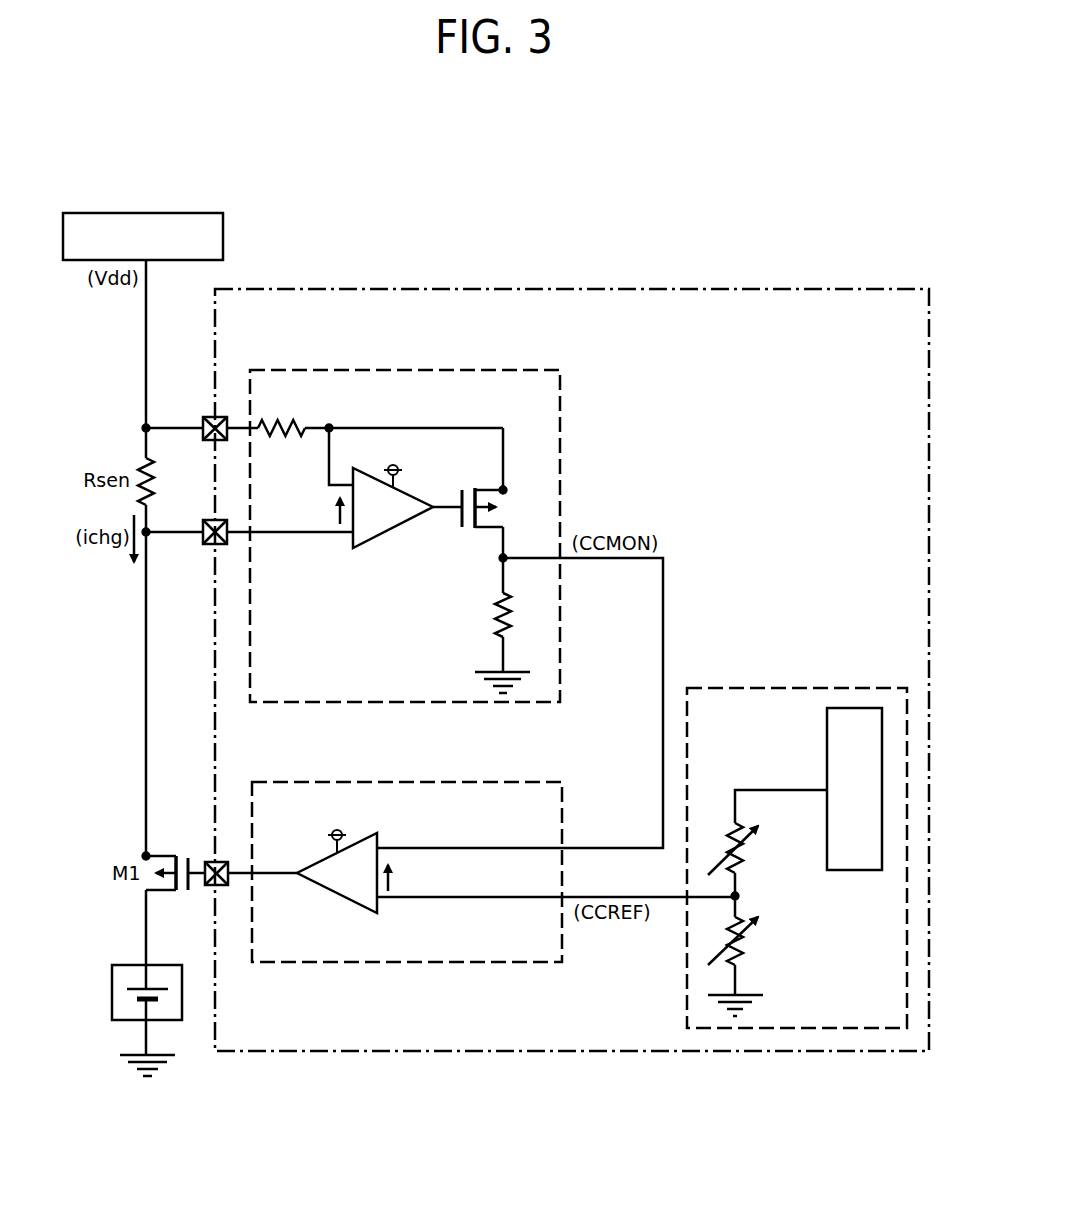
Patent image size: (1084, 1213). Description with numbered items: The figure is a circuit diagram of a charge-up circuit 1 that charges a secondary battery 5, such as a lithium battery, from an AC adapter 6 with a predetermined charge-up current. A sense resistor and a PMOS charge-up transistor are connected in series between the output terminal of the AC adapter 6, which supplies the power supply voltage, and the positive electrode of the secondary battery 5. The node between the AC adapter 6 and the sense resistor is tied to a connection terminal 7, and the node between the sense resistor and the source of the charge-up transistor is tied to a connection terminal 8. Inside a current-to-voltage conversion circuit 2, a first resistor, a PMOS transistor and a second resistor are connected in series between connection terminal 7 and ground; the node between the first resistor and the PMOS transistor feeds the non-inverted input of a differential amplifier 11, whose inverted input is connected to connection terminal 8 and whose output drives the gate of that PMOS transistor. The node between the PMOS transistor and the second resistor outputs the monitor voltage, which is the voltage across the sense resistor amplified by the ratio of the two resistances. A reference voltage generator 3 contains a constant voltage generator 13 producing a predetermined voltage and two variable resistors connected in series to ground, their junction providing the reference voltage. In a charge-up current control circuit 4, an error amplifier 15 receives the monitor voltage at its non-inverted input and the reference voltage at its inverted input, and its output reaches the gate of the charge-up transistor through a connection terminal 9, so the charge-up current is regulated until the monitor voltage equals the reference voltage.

The charge-up circuit 1 is at (635, 192).
The current-to-voltage conversion circuit 2 is at (545, 370).
The reference voltage generator 3 is at (687, 1003).
The charge-up current control circuit 4 is at (546, 782).
The secondary battery 5 is at (126, 965).
The AC adapter 6 is at (207, 213).
The connection terminal 7 is at (205, 417).
The connection terminal 8 is at (206, 520).
The connection terminal 9 is at (208, 862).
The differential amplifier 11 is at (385, 534).
The constant voltage generator 13 is at (840, 708).
The error amplifier 15 is at (353, 903).